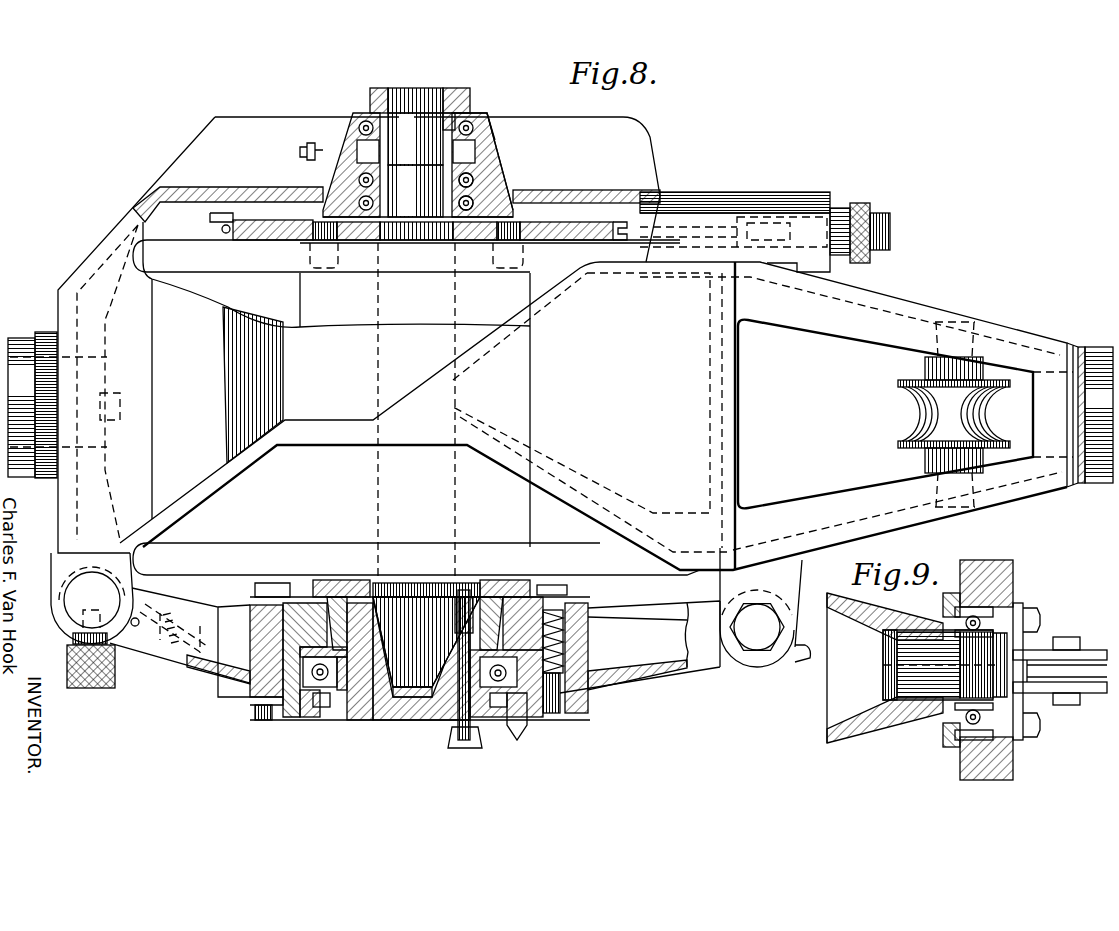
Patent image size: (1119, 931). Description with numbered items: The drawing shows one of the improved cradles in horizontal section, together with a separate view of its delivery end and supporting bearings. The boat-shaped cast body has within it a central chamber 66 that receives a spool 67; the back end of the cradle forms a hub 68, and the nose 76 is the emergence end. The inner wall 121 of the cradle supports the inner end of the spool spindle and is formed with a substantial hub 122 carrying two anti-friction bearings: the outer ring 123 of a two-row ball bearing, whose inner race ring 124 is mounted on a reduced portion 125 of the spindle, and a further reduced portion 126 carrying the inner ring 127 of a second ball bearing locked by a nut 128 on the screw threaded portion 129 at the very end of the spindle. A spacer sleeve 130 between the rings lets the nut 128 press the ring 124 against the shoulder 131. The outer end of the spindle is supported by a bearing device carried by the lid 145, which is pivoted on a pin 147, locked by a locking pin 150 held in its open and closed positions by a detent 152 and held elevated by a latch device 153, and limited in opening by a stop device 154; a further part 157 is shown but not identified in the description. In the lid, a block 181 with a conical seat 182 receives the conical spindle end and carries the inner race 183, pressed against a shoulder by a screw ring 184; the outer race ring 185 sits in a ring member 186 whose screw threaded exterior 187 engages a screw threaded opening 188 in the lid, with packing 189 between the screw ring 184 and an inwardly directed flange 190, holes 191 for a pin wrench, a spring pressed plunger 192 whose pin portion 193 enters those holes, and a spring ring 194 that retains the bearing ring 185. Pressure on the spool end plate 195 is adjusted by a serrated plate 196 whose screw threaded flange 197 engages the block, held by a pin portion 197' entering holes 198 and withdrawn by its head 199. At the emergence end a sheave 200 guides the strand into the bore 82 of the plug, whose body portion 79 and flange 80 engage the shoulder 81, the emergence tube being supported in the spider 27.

In FIG. 8, the central chamber 66 is at (170, 220).
In FIG. 8, the spool 67 is at (246, 545).
In FIG. 8, the hub 68 is at (25, 340).
In FIG. 8, the nose 76 is at (1100, 357).
In FIG. 8, the inner wall 121 is at (640, 184).
In FIG. 8, the hub 122 is at (500, 158).
In FIG. 8, the outer ring 123 is at (500, 189).
In FIG. 8, the inner race ring 124 is at (490, 119).
In FIG. 8, the reduced portion 125 is at (333, 314).
In FIG. 8, the further reduced portion 126 is at (415, 139).
In FIG. 8, the inner ring 127 is at (472, 113).
In FIG. 8, the nut 128 is at (459, 96).
In FIG. 8, the screw threaded portion 129 is at (418, 92).
In FIG. 8, the spacer sleeve 130 is at (378, 158).
In FIG. 8, the shoulder 131 is at (415, 215).
In FIG. 8, the lid 145 is at (623, 688).
In FIG. 8, the pin 147 is at (757, 629).
In FIG. 8, the locking pin 150 is at (92, 598).
In FIG. 8, the detent 152 is at (101, 689).
In FIG. 8, the latch device 153 is at (134, 634).
In FIG. 8, the stop device 154 is at (797, 647).
In FIG. 8, the pivot bracket 157 is at (58, 603).
In FIG. 8, the block 181 is at (380, 700).
In FIG. 8, the conical seat 182 is at (418, 698).
In FIG. 8, the inner race 183 is at (354, 690).
In FIG. 8, the screw ring 184 is at (335, 690).
In FIG. 8, the outer race ring 185 is at (303, 716).
In FIG. 8, the ring member 186 is at (299, 712).
In FIG. 8, the screw threaded exterior 187 is at (280, 702).
In FIG. 8, the screw threaded opening 188 is at (196, 642).
In FIG. 8, the packing 189 is at (320, 708).
In FIG. 8, the inwardly directed flange 190 is at (304, 702).
In FIG. 8, the holes 191 is at (265, 723).
In FIG. 8, the spring pressed plunger 192 is at (566, 708).
In FIG. 8, the pin portion 193 is at (555, 715).
In FIG. 8, the spring ring 194 is at (312, 613).
In FIG. 8, the plate 195 is at (567, 588).
In FIG. 8, the plate 196 is at (510, 578).
In FIG. 8, the screw threaded flange 197 is at (512, 623).
In FIG. 8, the pin portion 197' is at (475, 628).
In FIG. 8, the holes 198 is at (453, 580).
In FIG. 8, the head 199 is at (470, 748).
In FIG. 8, the sheave 200 is at (947, 414).
In FIG. 9, the spider 27 is at (1013, 573).
In FIG. 9, the body portion 79 is at (910, 658).
In FIG. 9, the flange 80 is at (895, 699).
In FIG. 9, the shoulder 81 is at (897, 627).
In FIG. 9, the emergence tube or passage 82 is at (990, 679).